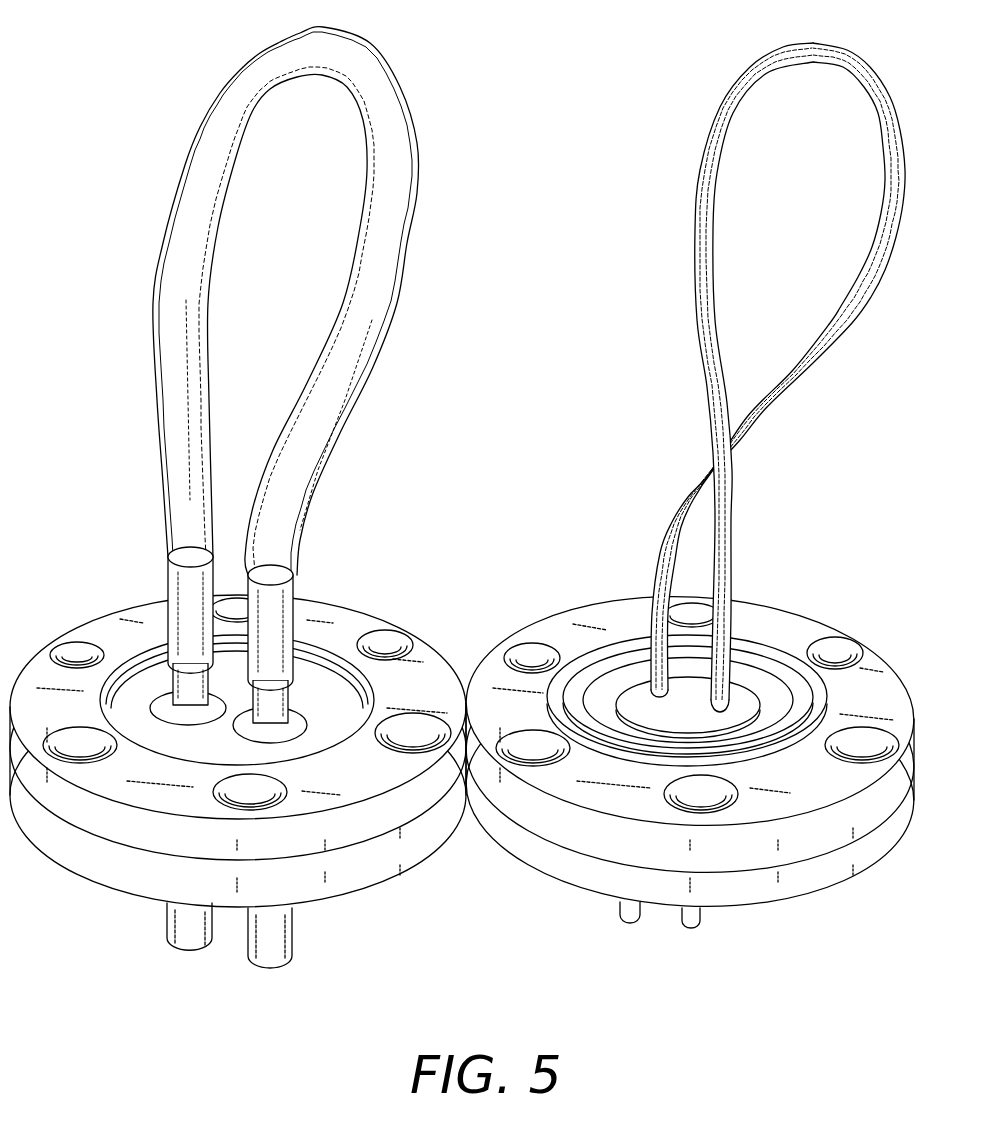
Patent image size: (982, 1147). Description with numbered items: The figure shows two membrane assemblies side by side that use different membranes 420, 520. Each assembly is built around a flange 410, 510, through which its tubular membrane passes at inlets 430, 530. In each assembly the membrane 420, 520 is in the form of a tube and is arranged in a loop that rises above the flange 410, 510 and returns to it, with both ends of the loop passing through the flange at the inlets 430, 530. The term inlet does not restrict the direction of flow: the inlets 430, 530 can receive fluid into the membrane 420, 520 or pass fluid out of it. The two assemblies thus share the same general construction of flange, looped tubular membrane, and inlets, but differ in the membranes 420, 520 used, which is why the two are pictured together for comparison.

The flange 410 is at (618, 905).
The membrane 420 is at (684, 514).
The inlets 430 is at (640, 648).
The flange 510 is at (97, 882).
The membrane 520 is at (168, 397).
The inlets 530 is at (180, 680).